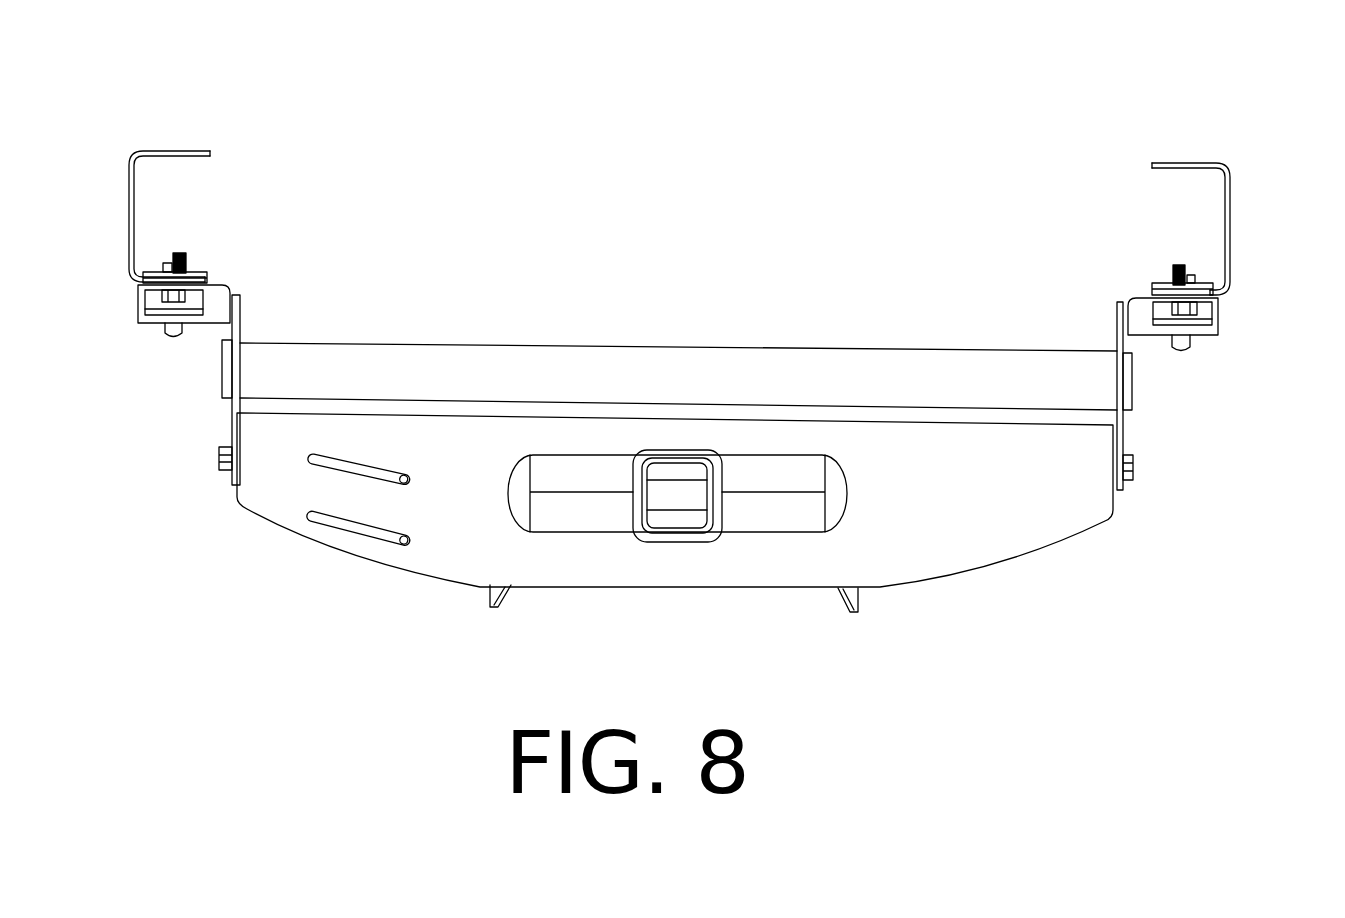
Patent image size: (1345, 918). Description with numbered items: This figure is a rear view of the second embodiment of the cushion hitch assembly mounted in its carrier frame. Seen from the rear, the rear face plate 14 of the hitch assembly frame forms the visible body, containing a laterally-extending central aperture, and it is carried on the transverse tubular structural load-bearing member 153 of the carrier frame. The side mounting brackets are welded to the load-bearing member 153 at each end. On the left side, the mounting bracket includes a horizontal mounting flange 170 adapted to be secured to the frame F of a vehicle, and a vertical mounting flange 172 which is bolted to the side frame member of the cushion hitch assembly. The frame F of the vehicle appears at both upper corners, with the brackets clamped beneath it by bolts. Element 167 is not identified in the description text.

The rear face plate 14 is at (1000, 529).
The transverse tubular structural load-bearing member 153 is at (675, 368).
The right clamp assembly 167 is at (1203, 337).
The horizontal mounting flange 170 is at (205, 325).
The vertical mounting flange 172 is at (228, 420).
The frame F is at (170, 152).